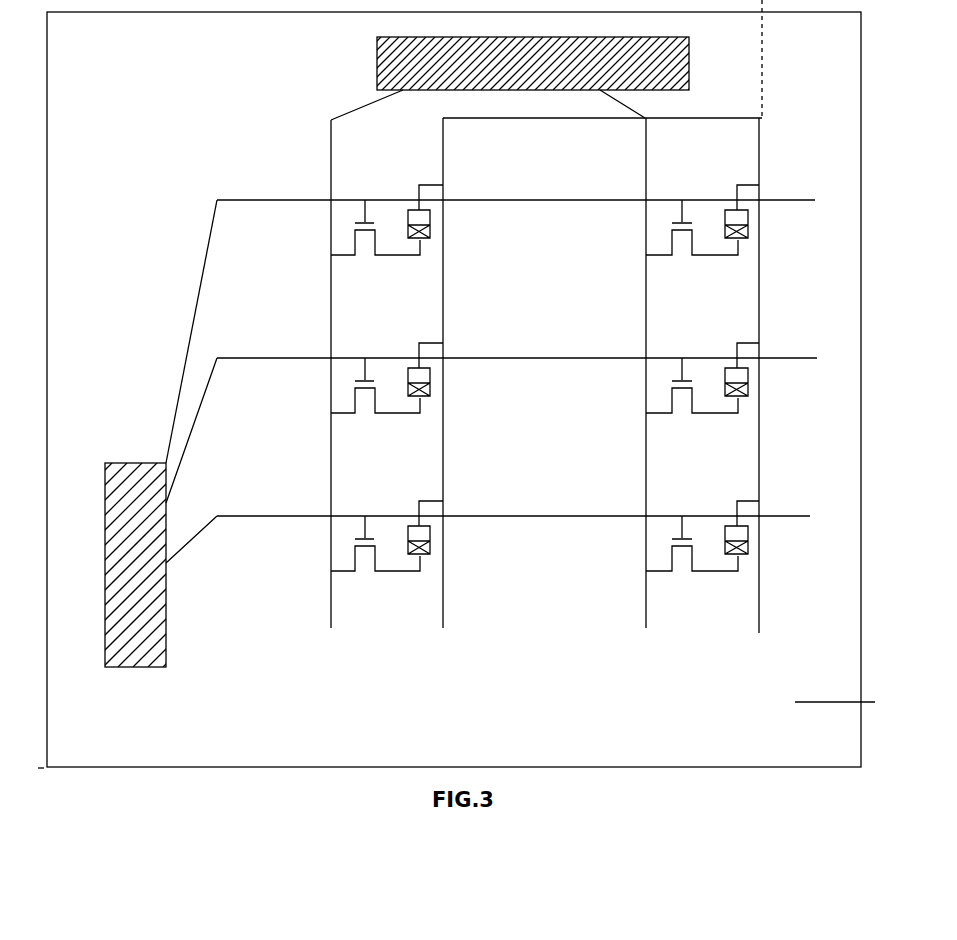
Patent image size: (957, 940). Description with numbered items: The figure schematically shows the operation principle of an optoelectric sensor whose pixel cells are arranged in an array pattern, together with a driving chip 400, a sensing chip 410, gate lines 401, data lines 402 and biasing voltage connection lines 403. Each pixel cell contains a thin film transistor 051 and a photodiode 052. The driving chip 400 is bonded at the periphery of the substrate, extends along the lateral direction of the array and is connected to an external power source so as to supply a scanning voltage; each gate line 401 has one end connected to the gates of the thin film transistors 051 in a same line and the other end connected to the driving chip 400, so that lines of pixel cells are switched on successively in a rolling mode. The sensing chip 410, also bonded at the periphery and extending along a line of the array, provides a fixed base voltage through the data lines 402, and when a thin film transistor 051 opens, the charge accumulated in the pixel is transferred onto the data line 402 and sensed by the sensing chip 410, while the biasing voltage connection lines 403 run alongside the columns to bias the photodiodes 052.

The driving chip 400 is at (120, 668).
The gate lines 401 is at (303, 199).
The data lines 402 is at (330, 307).
The biasing voltage connection lines 403 is at (443, 283).
The sensing chip 410 is at (683, 60).
The thin film transistor 051 is at (369, 257).
The photodiode 052 is at (410, 208).